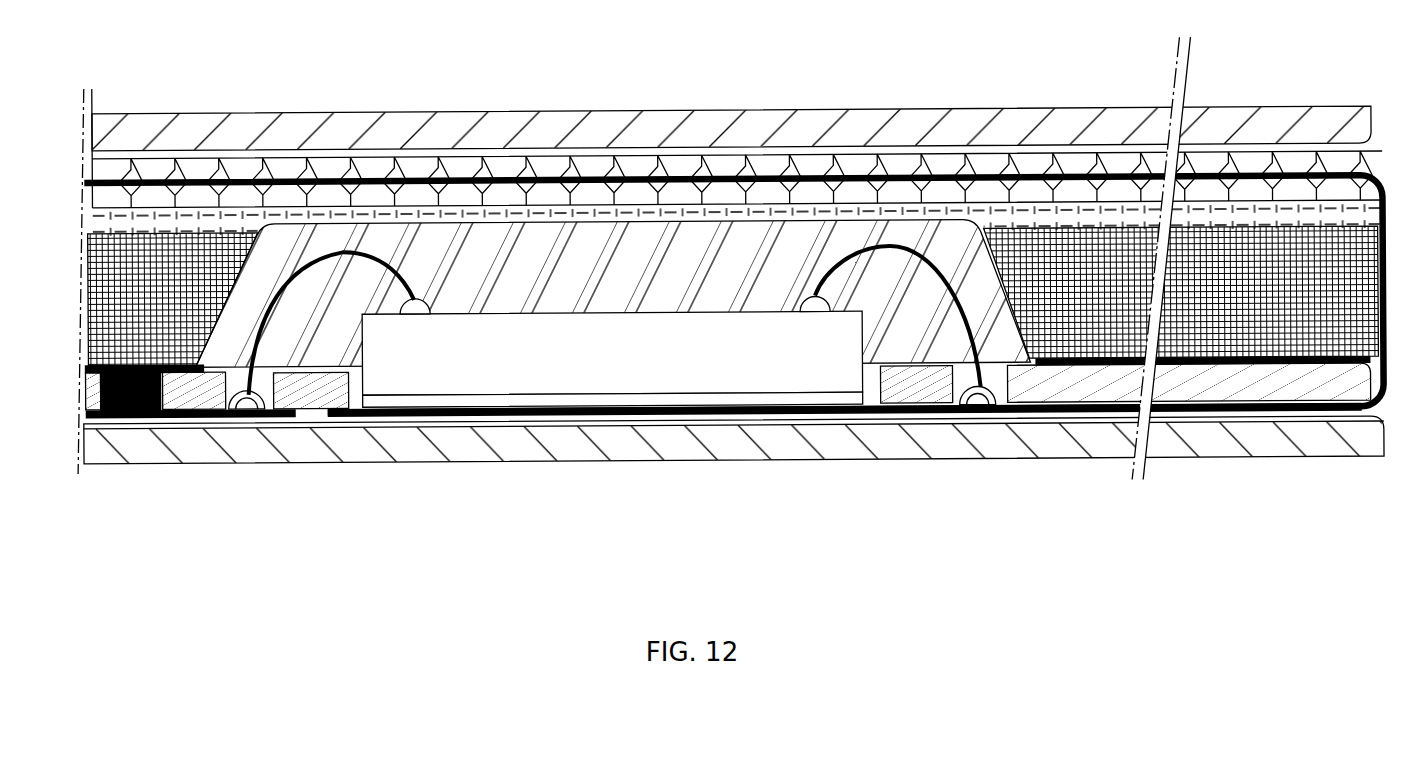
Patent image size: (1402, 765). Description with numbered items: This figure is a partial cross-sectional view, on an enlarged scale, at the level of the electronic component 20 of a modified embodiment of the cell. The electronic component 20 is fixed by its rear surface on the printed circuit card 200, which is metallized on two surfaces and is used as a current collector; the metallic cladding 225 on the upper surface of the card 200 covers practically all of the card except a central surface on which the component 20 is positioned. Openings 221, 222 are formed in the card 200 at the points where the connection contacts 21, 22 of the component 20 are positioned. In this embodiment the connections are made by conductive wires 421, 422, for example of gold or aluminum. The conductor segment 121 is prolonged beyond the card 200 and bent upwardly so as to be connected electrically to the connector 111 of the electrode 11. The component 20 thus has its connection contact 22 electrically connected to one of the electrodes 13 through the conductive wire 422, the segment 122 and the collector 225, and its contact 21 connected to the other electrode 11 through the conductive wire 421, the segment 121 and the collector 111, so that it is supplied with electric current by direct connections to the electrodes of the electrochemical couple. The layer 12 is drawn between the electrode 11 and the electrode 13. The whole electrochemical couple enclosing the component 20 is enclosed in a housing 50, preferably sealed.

The housing 50 is at (612, 120).
The connector 111 is at (422, 176).
The electrode 11 is at (853, 163).
The second layer 12 is at (1057, 215).
The electrode 13 is at (1293, 257).
The metallic cladding 225 is at (138, 362).
The segment 122 is at (180, 422).
The opening 222 is at (250, 420).
The conductive wire 422 is at (320, 260).
The connection contact 22 is at (411, 316).
The conductor segment 121 is at (590, 415).
The electronic component 20 is at (703, 357).
The connection contact 21 is at (815, 315).
The conductive wire 421 is at (917, 287).
The opening 221 is at (988, 405).
The printed circuit card 200 is at (1118, 385).